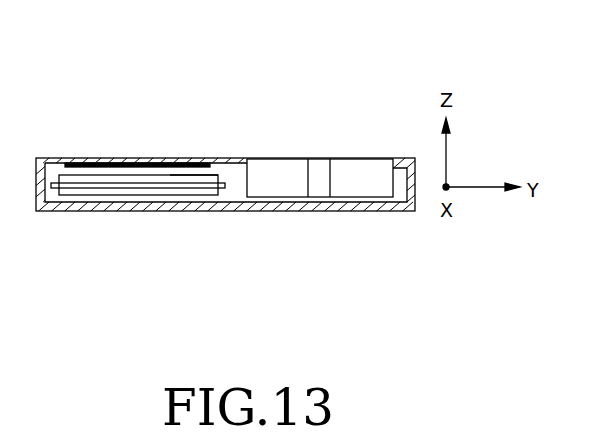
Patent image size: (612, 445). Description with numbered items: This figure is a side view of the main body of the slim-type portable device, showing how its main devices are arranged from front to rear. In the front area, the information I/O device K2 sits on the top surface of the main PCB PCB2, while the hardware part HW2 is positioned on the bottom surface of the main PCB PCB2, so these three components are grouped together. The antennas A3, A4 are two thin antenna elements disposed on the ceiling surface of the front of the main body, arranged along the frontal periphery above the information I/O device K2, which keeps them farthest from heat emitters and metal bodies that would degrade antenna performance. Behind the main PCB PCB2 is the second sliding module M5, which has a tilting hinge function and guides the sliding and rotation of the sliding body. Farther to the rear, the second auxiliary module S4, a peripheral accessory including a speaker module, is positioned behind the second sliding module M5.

The antenna A3 is at (125, 118).
The antenna A4 is at (85, 163).
The main PCB PCB2 is at (148, 186).
The information I/O device K2 is at (193, 180).
The hardware part HW2 is at (167, 190).
The second sliding module M5 is at (280, 167).
The second auxiliary module S4 is at (368, 190).